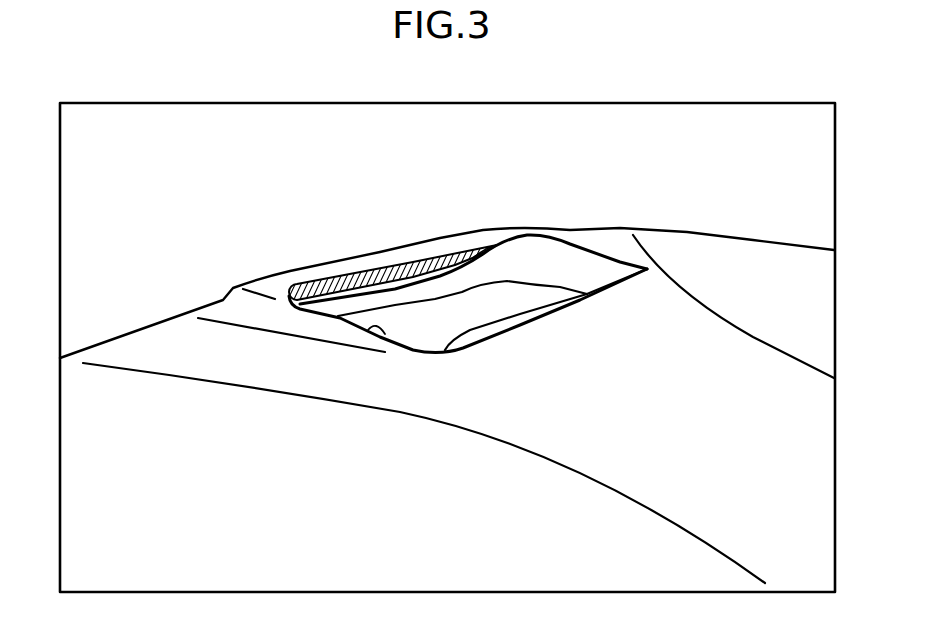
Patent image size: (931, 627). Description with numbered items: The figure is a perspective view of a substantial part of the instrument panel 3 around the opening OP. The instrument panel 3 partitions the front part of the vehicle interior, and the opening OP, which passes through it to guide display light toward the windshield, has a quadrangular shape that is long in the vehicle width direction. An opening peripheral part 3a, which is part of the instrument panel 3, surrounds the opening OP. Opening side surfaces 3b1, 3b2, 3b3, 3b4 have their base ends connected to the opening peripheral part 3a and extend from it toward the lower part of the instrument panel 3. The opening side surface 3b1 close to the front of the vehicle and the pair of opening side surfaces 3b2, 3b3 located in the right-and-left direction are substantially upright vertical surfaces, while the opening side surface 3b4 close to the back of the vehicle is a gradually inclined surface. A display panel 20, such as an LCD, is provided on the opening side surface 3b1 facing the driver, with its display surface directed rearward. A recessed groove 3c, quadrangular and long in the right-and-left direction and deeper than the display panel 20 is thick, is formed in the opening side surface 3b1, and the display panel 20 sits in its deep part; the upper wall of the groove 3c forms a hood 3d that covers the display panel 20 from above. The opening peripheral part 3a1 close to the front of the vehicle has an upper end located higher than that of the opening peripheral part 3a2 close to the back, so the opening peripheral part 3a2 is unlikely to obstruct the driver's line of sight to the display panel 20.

The instrument panel 3 is at (330, 503).
The opening peripheral part 3a is at (478, 271).
The opening peripheral part close to the front side of the vehicle 3a1 is at (457, 257).
The opening peripheral part close to the back side of the vehicle 3a2 is at (503, 332).
The opening side surface 3b1 is at (395, 296).
The opening side surface 3b2 is at (567, 265).
The opening side surface 3b3 is at (385, 338).
The opening side surface 3b4 is at (530, 312).
The recessed groove 3c is at (438, 274).
The hood 3d is at (488, 250).
The opening OP is at (523, 270).
The display panel 20 is at (337, 287).